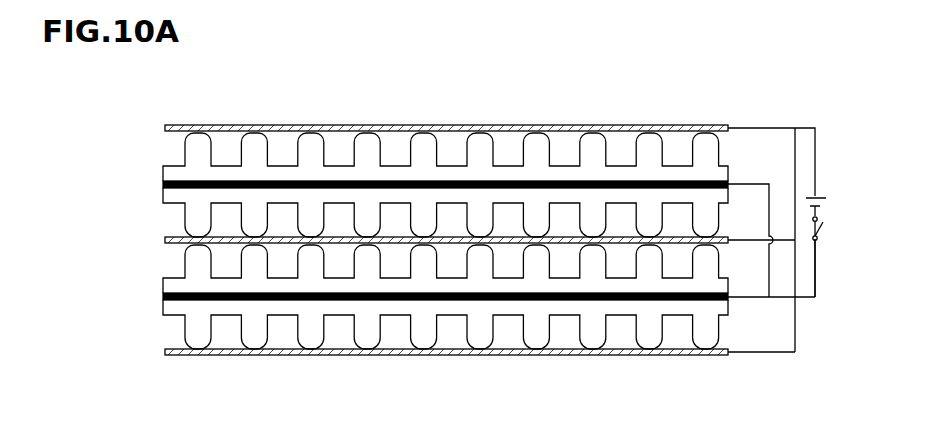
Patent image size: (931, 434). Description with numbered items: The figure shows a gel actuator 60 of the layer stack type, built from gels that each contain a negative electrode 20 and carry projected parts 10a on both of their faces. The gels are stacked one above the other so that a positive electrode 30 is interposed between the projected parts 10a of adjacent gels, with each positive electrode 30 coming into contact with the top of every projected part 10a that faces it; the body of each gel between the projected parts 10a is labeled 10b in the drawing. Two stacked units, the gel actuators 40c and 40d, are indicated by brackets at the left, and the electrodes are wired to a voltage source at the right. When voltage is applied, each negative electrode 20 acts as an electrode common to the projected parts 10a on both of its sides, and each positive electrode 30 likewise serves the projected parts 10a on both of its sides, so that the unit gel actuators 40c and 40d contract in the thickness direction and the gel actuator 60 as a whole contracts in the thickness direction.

The projected part 10a is at (258, 145).
The negative electrode 10b is at (445, 175).
The negative electrode 20 is at (357, 183).
The positive electrode 30 is at (500, 240).
The gel actuator 40c is at (152, 130).
The gel actuator 40d is at (152, 243).
The gel actuator 60 is at (678, 101).